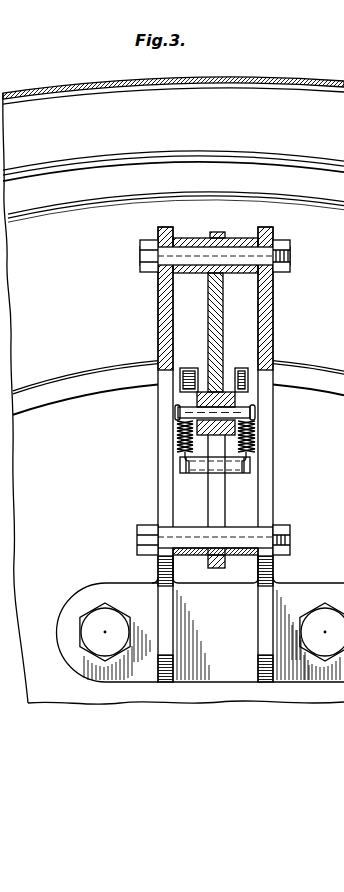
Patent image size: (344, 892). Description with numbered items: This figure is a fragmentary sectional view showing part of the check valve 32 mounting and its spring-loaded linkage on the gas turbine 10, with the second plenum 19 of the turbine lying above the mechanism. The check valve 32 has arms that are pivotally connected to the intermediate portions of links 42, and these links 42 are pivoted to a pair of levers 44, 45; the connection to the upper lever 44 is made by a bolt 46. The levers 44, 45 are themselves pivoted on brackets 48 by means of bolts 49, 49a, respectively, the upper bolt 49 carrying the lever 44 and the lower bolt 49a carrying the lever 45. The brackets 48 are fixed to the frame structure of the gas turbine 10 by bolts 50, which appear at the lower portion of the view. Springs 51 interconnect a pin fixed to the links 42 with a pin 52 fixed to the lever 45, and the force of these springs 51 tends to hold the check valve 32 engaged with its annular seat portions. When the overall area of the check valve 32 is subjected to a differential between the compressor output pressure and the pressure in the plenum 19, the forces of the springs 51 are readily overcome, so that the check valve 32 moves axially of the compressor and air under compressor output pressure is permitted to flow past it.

The gas turbine 10 is at (50, 703).
The second plenum 19 is at (280, 95).
The check valve 32 is at (85, 256).
The links 42 is at (188, 385).
The lever 44 is at (223, 306).
The lever 45 is at (222, 495).
The bolt 46 is at (178, 412).
The brackets 48 is at (163, 296).
The bolt 49 is at (183, 254).
The bolt 49a is at (146, 530).
The bolts 50 is at (107, 625).
The springs 51 is at (180, 445).
The pin 52 is at (178, 467).